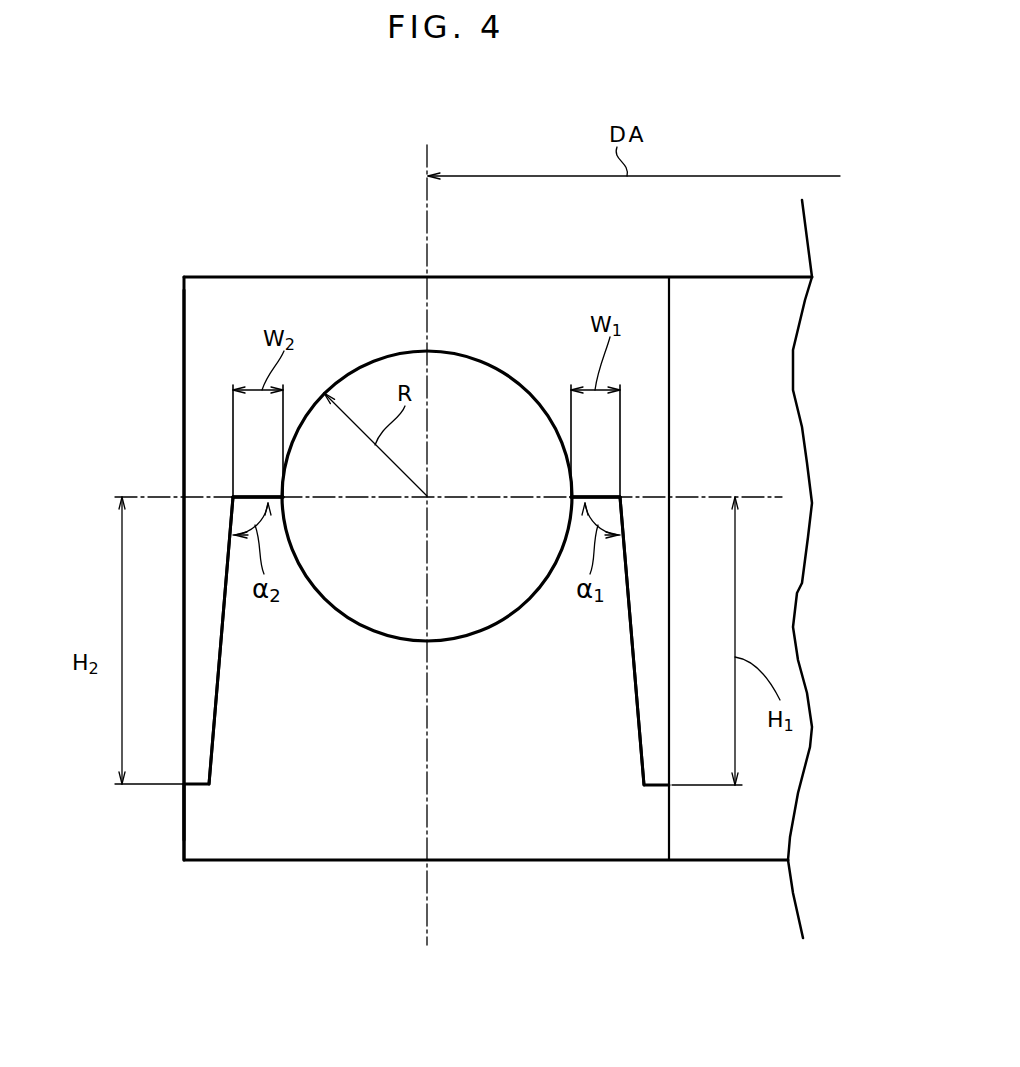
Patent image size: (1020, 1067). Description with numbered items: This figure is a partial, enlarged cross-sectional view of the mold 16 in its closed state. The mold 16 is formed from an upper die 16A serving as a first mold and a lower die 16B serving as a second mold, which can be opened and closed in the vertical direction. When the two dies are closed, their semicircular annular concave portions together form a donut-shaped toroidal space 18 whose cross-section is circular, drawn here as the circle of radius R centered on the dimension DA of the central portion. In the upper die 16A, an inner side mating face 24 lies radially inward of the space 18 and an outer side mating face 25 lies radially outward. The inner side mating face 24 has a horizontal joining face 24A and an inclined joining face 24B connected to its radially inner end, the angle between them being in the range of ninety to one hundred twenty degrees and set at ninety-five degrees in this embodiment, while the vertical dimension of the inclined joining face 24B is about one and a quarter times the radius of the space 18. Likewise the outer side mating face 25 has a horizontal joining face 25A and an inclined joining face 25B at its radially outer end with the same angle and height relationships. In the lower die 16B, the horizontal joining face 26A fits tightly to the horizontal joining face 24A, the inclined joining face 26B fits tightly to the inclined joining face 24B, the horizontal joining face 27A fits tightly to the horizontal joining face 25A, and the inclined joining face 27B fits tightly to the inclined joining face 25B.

The mold 16 is at (316, 275).
The upper die 16A is at (183, 345).
The lower die 16B is at (183, 829).
The toroidal space 18 is at (493, 450).
The inner side mating face 24 is at (475, 513).
The horizontal joining face 24A is at (577, 505).
The inclined joining face 24B is at (628, 638).
The outer side mating face 25 is at (377, 510).
The horizontal joining face 25A is at (285, 508).
The inclined joining face 25B is at (218, 680).
The horizontal joining face 26A is at (603, 495).
The inclined joining face 26B is at (628, 572).
The horizontal joining face 27A is at (243, 492).
The inclined joining face 27B is at (227, 552).